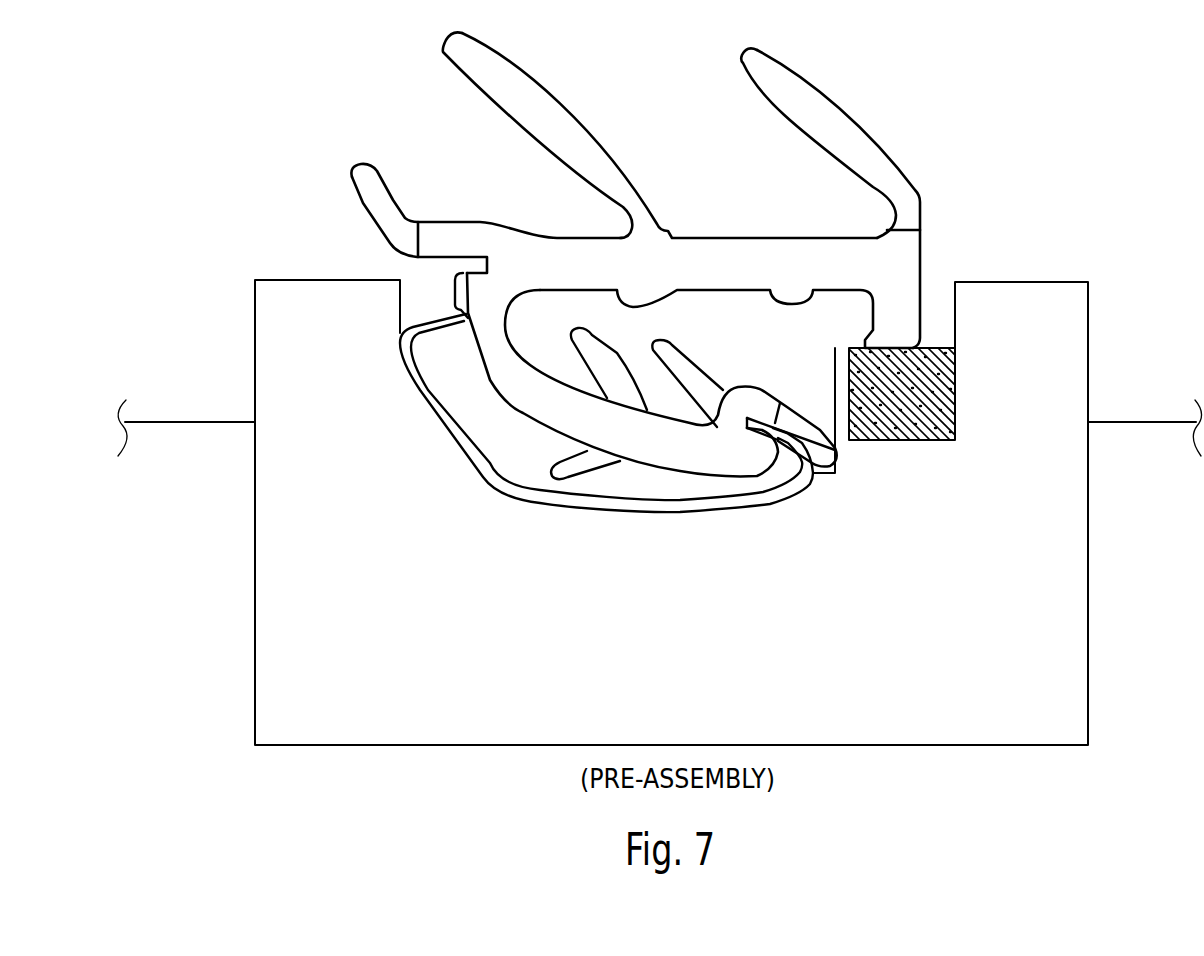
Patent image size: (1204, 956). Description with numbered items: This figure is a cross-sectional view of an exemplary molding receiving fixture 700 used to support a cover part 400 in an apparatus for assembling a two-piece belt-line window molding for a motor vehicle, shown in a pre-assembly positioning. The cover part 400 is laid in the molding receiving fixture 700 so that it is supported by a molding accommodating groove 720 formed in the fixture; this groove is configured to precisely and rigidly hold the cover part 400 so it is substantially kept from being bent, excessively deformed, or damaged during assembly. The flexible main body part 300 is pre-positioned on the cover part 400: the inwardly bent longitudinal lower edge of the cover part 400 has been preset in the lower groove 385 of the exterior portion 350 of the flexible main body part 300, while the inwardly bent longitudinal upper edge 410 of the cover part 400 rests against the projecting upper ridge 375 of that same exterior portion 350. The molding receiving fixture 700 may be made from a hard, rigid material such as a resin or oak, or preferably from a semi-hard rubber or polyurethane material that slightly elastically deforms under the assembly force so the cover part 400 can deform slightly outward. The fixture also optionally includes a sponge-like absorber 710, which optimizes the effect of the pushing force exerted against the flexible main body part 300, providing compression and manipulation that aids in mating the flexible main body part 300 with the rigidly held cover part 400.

The flexible main body part 300 is at (905, 262).
The exterior portion 350 is at (686, 455).
The projecting upper ridge 375 is at (462, 289).
The lower groove 385 is at (836, 448).
The cover part 400 is at (484, 478).
The inwardly bent longitudinal upper edge 410 is at (454, 325).
The molding receiving fixture 700 is at (1063, 663).
The sponge-like absorber 710 is at (955, 388).
The molding accommodating groove 720 is at (527, 505).